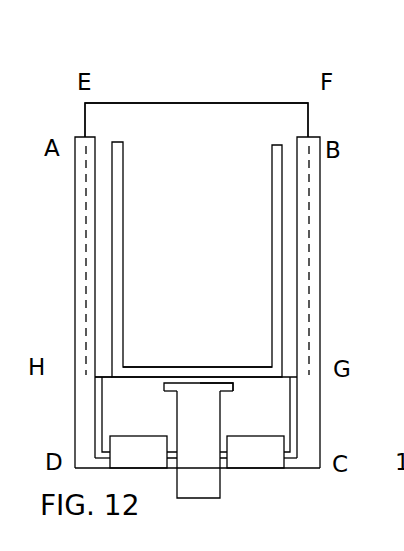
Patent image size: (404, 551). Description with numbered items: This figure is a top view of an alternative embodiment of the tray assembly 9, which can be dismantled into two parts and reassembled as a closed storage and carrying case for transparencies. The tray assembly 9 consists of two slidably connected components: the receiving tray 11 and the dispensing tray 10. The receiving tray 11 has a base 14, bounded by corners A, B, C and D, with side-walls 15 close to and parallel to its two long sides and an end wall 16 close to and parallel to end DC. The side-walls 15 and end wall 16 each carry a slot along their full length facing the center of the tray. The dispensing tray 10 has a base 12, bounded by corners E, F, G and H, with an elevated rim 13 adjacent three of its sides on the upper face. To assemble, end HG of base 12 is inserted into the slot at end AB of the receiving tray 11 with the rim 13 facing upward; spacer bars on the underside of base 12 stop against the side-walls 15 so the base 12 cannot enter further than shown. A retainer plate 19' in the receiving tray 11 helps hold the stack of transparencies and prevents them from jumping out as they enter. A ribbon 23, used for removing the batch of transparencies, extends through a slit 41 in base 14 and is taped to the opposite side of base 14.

The tray assembly 9 is at (178, 60).
The dispensing tray 10 is at (311, 120).
The receiving tray 11 is at (138, 402).
The base 12 is at (245, 323).
The elevated rim 13 is at (118, 267).
The base 14 is at (270, 411).
The side-walls 15 is at (82, 203).
The end wall 16 is at (297, 466).
The retainer plate 19' is at (193, 442).
The ribbon 23 is at (205, 490).
The slit 41 is at (235, 384).